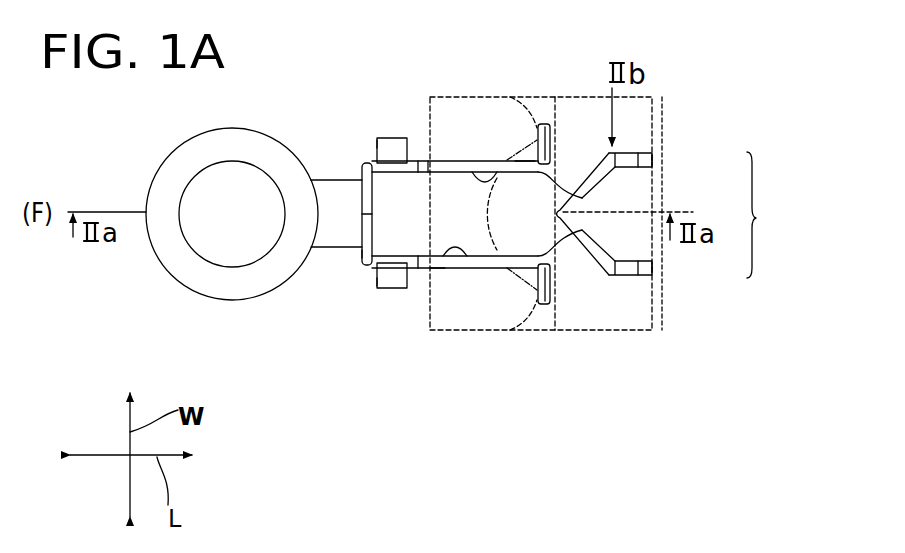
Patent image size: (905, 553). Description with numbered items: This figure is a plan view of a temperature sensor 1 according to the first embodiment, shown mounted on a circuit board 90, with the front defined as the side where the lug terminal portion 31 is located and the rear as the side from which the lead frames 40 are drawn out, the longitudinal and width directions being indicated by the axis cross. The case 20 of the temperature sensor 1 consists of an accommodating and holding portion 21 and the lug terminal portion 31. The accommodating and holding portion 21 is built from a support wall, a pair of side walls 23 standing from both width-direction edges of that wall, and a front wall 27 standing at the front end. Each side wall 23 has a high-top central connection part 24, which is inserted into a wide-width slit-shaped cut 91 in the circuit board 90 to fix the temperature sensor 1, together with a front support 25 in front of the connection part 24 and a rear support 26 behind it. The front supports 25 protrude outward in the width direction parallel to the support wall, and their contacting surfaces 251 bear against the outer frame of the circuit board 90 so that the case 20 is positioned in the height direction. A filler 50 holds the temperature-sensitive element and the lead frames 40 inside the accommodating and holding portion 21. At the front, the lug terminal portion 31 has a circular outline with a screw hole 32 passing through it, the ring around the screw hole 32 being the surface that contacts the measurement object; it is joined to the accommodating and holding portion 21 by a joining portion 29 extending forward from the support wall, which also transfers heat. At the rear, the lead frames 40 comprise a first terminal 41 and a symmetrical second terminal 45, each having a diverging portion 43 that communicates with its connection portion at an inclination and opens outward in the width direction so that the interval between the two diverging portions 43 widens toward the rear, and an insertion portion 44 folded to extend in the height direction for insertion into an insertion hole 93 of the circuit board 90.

The temperature sensor 1 is at (362, 65).
The case 20 is at (337, 178).
The accommodating and holding portion 21 is at (437, 268).
The side wall 23 is at (470, 165).
The connection part 24 is at (525, 161).
The front support 25 is at (390, 138).
The contacting surface 251 is at (383, 140).
The rear support 26 is at (552, 130).
The front wall 27 is at (365, 258).
The joining portion 29 is at (323, 248).
The lug terminal portion 31 is at (238, 300).
The screw hole 32 is at (248, 230).
The lead frames 40 is at (690, 215).
The first terminal 41 is at (620, 258).
The diverging portion 43 is at (598, 160).
The insertion portion 44 is at (645, 153).
The second terminal 45 is at (620, 172).
The filler 50 is at (428, 161).
The circuit board 90 is at (427, 330).
The cut 91 is at (483, 161).
The insertion hole 93 is at (668, 162).